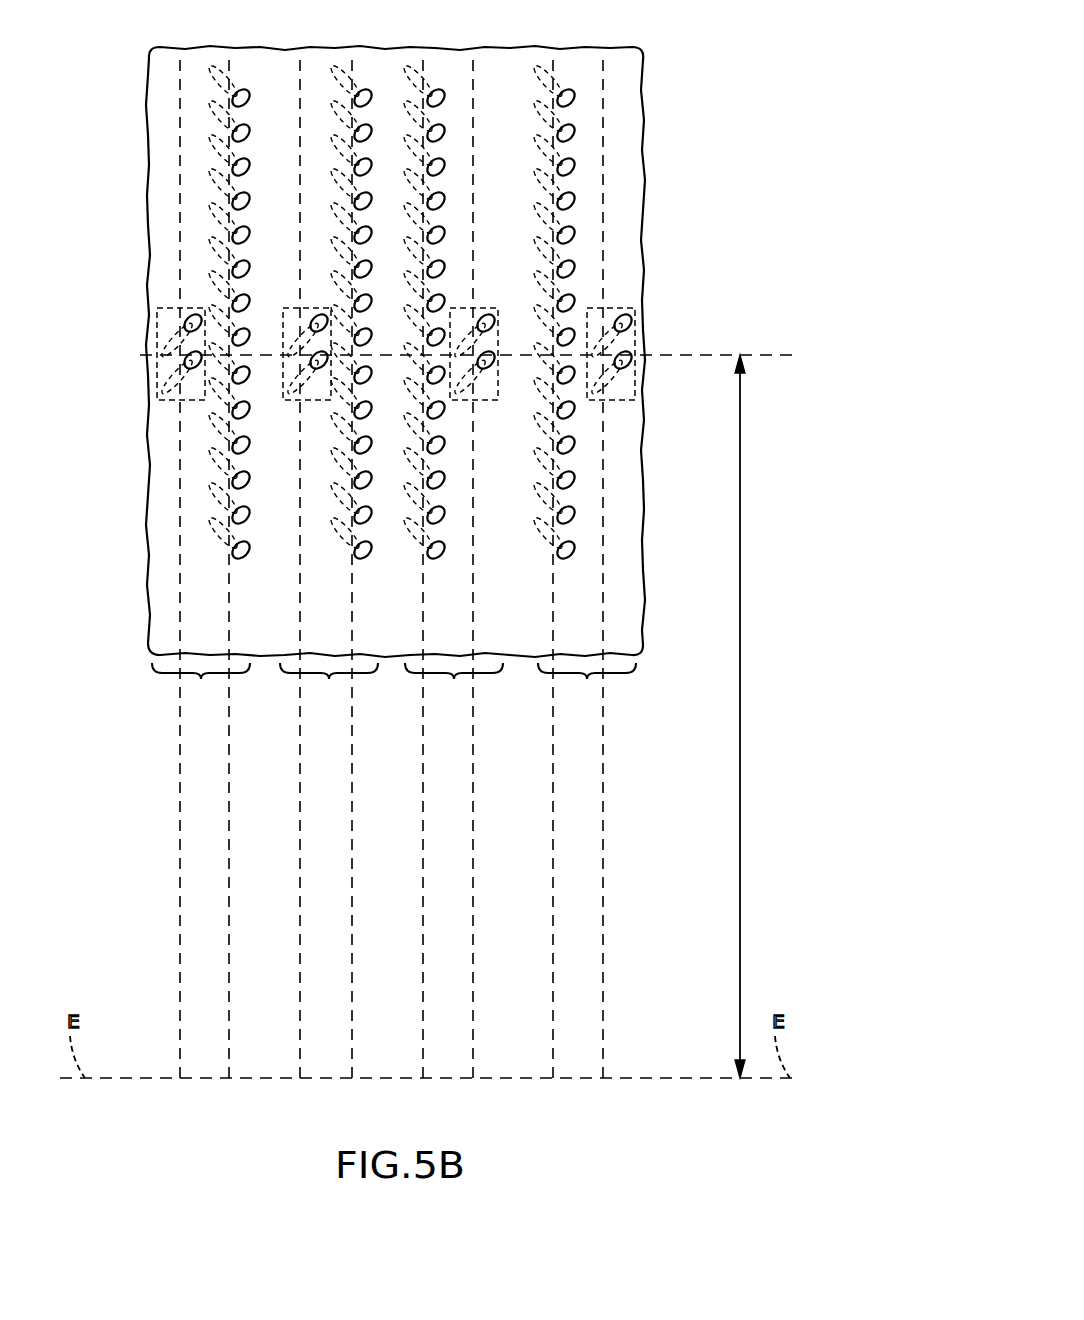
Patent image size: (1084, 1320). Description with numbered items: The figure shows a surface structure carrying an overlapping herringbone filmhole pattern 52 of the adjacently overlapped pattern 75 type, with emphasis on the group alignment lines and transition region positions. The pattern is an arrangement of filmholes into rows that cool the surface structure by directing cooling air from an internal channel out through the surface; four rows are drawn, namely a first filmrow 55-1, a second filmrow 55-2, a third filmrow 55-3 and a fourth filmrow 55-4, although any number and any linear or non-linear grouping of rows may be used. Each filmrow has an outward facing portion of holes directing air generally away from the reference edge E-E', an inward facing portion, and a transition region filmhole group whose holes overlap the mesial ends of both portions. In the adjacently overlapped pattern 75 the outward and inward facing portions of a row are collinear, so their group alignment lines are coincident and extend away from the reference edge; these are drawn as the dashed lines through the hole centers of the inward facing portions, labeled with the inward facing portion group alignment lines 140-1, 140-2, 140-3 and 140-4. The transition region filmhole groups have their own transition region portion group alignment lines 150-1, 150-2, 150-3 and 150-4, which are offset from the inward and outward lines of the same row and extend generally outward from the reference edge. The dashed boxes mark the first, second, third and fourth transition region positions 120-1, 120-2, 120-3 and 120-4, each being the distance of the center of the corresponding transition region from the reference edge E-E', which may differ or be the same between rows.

The adjacently overlapped pattern 75 is at (688, 92).
The overlapping herringbone filmhole pattern 52 is at (347, 383).
The first filmrow 55-1 is at (202, 383).
The second filmrow 55-2 is at (329, 383).
The third filmrow 55-3 is at (452, 383).
The fourth filmrow 55-4 is at (583, 383).
The first transition region position 120-1 is at (710, 353).
The second transition region position 120-2 is at (307, 354).
The third transition region position 120-3 is at (474, 354).
The fourth transition region position 120-4 is at (611, 354).
The inward facing portion group alignment line 140-1 is at (157, 610).
The transition region portion group alignment line 150-1 is at (178, 1057).
The inward facing portion group alignment line 140-2 is at (194, 569).
The transition region portion group alignment line 150-2 is at (300, 970).
The inward facing portion group alignment line 140-3 is at (569, 569).
The transition region portion group alignment line 150-3 is at (473, 933).
The inward facing portion group alignment line 140-4 is at (629, 605).
The transition region portion group alignment line 150-4 is at (603, 1057).